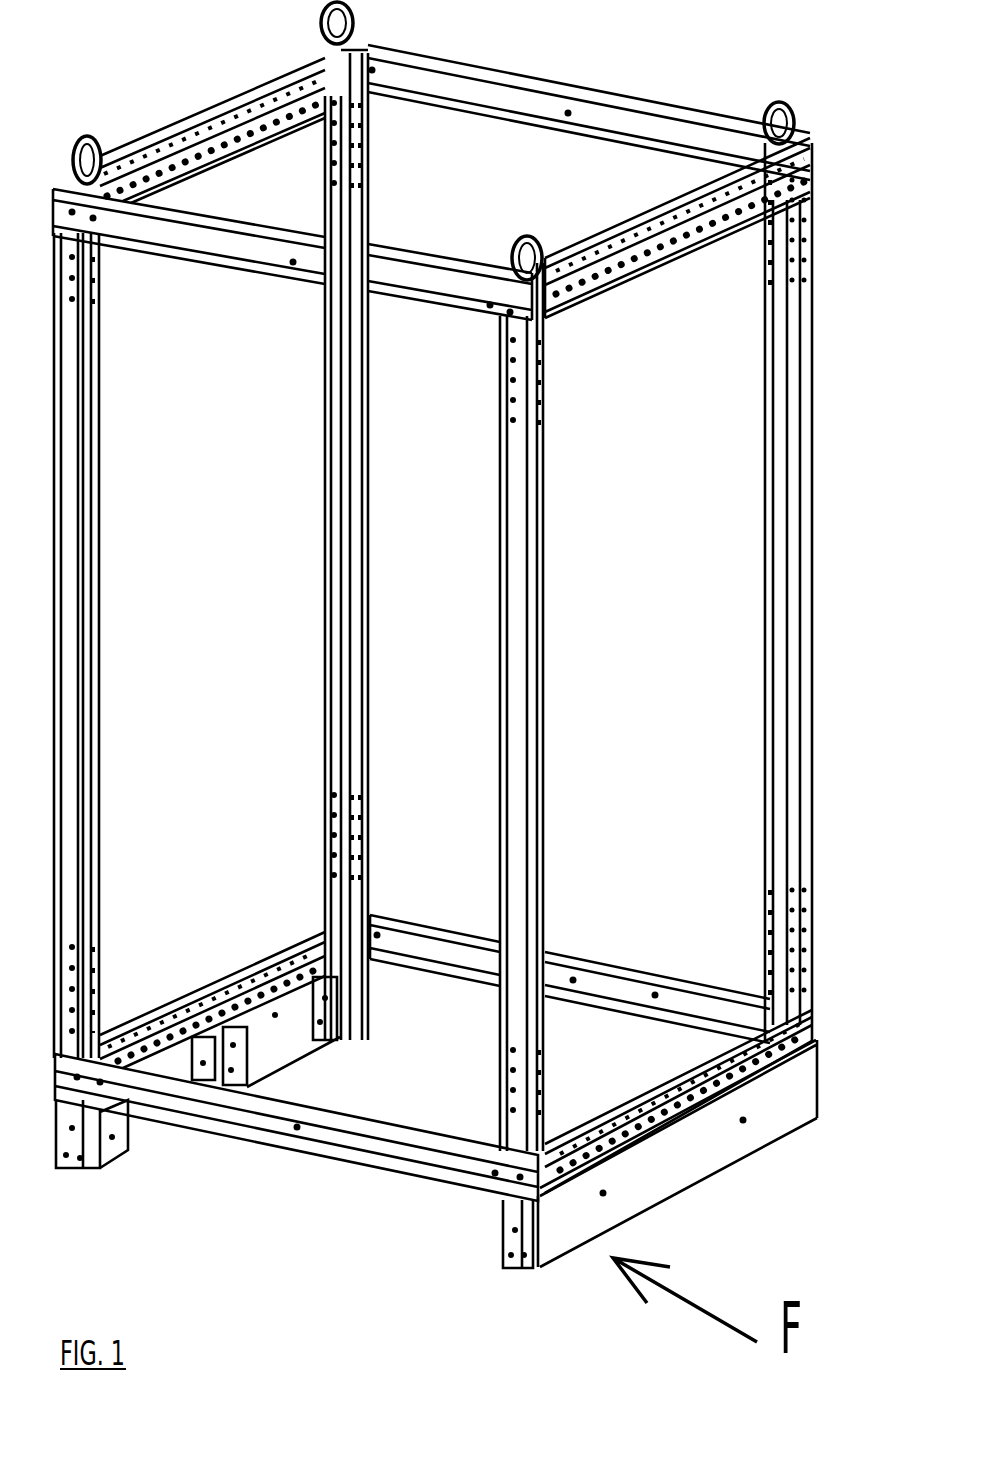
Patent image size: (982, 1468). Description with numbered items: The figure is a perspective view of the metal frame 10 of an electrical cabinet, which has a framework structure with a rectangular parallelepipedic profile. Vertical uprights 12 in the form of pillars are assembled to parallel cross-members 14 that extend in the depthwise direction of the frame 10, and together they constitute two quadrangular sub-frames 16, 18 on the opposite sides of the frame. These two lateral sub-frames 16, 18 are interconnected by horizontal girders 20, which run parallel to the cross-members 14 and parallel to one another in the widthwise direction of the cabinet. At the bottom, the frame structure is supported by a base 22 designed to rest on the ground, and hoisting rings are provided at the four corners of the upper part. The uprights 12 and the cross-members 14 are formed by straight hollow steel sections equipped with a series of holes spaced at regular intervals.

The metal frame 10 is at (741, 1217).
The vertical uprights 12 is at (248, 555).
The cross-members 14 is at (187, 118).
The quadrangular sub-frame 16 is at (122, 752).
The quadrangular sub-frame 18 is at (758, 496).
The horizontal girders 20 is at (270, 280).
The base 22 is at (150, 1157).